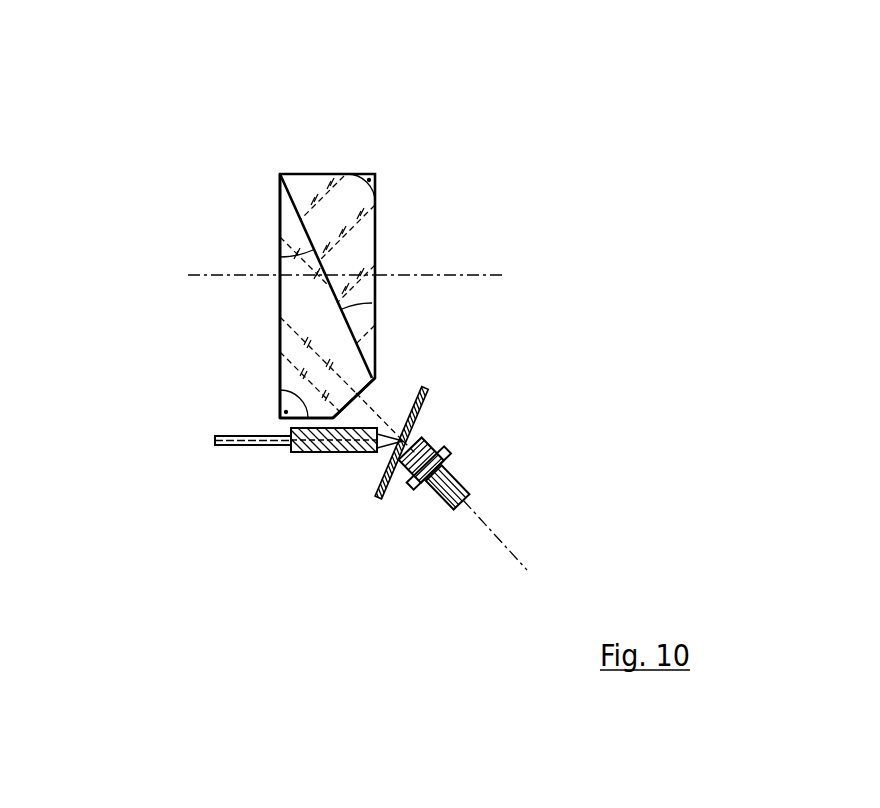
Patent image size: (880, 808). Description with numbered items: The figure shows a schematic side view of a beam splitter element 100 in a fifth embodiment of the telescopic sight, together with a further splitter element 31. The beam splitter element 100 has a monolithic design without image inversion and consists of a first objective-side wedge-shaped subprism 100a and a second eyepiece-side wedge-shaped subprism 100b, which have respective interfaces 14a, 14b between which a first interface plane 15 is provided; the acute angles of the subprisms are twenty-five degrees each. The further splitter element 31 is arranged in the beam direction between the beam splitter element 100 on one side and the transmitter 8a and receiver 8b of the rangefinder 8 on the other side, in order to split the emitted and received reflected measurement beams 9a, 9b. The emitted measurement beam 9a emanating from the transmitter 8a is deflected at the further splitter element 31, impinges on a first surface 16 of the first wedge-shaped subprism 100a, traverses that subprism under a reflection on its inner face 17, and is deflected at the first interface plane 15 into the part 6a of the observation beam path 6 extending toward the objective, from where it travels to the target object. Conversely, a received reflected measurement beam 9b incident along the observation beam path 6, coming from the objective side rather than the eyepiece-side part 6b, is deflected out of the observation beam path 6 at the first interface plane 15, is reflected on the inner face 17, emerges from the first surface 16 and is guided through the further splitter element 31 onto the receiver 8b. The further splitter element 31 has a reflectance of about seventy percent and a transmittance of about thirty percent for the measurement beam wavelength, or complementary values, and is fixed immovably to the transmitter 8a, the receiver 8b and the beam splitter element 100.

The beam splitter element 100 is at (299, 253).
The first objective-side wedge-shaped subprism 100a is at (295, 352).
The second eyepiece-side wedge-shaped subprism 100b is at (312, 185).
The observation beam path 6 is at (347, 388).
The part of the observation beam path extending toward the objective 6a is at (190, 268).
The part of the observation beam path 6b is at (470, 278).
The interface 14a is at (445, 215).
The interface 14b is at (185, 295).
The first interface plane 15 is at (211, 359).
The inner face 17 is at (280, 303).
The first surface 16 is at (363, 390).
The emitted measurement beam 9a is at (300, 410).
The received reflected measurement beam 9b is at (249, 417).
The rangefinder 8 is at (357, 489).
The transmitter 8a is at (292, 455).
The receiver 8b is at (418, 500).
The further splitter element 31 is at (377, 500).